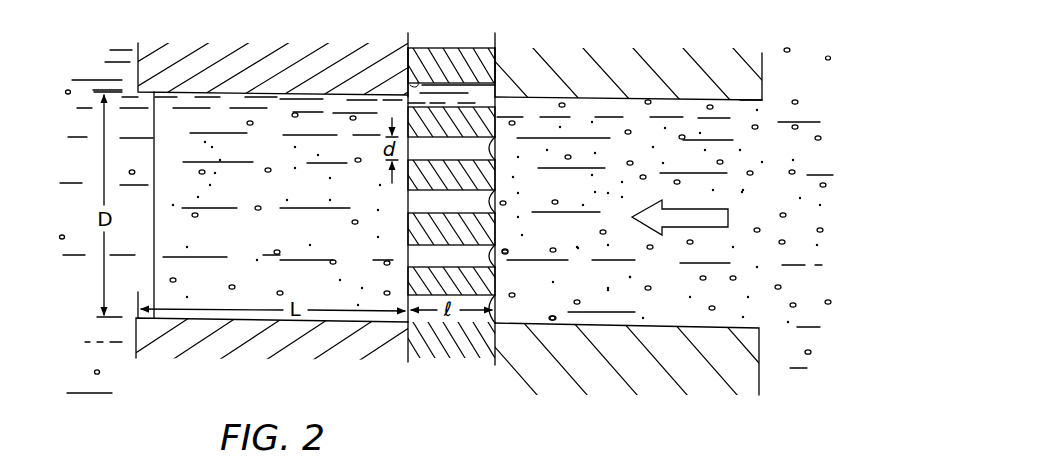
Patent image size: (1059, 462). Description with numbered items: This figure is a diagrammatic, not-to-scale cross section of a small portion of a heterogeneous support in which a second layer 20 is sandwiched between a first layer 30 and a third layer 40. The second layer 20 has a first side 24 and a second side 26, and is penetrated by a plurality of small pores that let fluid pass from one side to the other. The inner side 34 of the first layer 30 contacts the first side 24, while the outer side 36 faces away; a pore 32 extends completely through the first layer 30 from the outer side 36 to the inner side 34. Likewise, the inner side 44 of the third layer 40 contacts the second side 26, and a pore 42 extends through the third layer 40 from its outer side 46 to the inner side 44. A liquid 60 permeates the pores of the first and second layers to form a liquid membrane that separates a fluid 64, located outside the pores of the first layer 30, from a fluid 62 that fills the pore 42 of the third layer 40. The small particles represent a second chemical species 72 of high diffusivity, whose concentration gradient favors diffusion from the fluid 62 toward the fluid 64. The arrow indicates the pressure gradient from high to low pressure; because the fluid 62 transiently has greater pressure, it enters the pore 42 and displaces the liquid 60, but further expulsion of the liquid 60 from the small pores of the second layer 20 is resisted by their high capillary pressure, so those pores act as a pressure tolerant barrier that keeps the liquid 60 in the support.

The second layer 20 is at (483, 40).
The first side of the second layer 24 is at (407, 54).
The second side of the second layer 26 is at (497, 62).
The first layer 30 is at (131, 42).
The pores of the first layer 32 is at (80, 74).
The inner side of the first layer 34 is at (412, 86).
The outer side of the first layer 36 is at (137, 344).
The third layer 40 is at (736, 53).
The pores of the third layer 42 is at (767, 105).
The inner side of the third layer 44 is at (492, 345).
The outer side of the third layer 46 is at (760, 366).
The liquid 60 is at (238, 102).
The fluid 62 is at (821, 336).
The fluid 64 is at (67, 346).
The second chemical species 72 is at (583, 153).